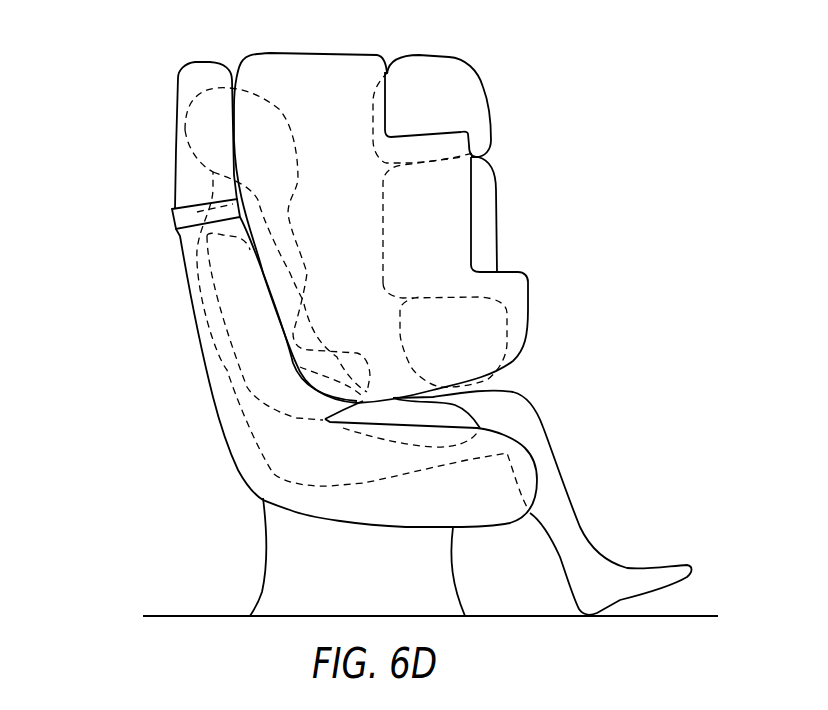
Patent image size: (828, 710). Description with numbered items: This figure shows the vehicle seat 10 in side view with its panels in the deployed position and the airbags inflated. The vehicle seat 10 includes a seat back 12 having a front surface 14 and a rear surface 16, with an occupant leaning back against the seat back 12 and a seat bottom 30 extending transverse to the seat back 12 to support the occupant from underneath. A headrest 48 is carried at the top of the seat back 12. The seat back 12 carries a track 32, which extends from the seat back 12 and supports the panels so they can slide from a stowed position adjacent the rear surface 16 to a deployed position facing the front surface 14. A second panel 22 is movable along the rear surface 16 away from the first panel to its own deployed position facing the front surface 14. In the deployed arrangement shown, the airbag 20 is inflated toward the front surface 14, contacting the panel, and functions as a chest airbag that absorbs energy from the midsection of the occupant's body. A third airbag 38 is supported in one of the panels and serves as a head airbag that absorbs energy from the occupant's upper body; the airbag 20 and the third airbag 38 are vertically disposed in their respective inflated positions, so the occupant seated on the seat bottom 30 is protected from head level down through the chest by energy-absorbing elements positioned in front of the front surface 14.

The vehicle seat 10 is at (63, 61).
The seat back 12 is at (180, 88).
The front surface 14 is at (231, 104).
The rear surface 16 is at (175, 155).
The airbag 20 is at (492, 232).
The second panel 22 is at (466, 190).
The seat bottom 30 is at (487, 327).
The track 32 is at (170, 220).
The third airbag 38 is at (476, 99).
The headrest 48 is at (187, 63).